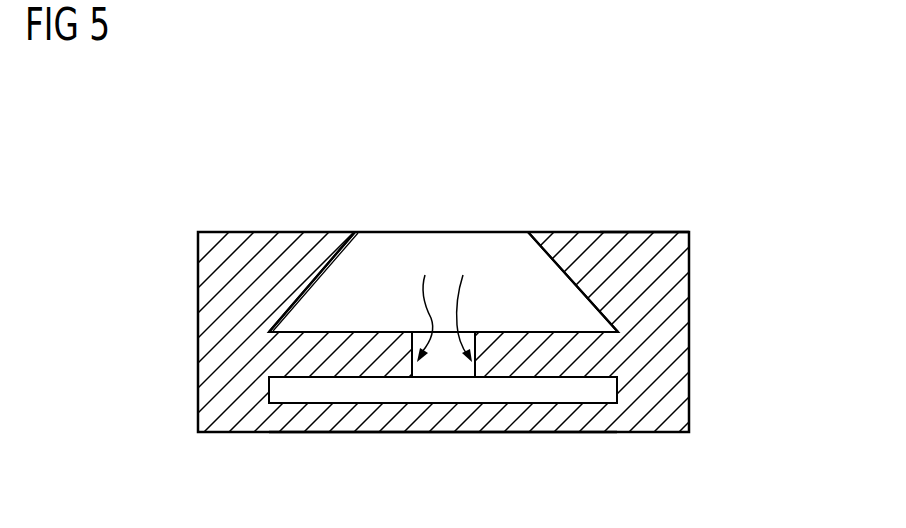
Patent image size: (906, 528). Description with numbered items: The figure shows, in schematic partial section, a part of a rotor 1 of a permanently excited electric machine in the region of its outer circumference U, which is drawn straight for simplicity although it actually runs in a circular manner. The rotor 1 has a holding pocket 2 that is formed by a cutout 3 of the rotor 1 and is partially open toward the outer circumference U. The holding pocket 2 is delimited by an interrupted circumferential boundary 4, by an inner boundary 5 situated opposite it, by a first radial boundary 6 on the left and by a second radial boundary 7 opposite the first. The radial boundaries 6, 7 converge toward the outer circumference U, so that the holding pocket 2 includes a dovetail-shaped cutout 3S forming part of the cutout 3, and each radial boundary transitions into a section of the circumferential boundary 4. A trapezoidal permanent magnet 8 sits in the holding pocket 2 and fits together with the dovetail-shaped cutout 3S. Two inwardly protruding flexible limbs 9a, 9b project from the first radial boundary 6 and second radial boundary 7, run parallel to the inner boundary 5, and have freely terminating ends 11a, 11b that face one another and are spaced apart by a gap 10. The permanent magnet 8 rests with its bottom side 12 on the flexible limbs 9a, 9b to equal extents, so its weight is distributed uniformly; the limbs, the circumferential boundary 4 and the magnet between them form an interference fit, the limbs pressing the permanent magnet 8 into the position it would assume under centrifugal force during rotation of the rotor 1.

The rotor 1 is at (454, 336).
The holding pocket 2 is at (603, 387).
The cutout 3 is at (281, 385).
The dovetail-shaped cutout 3S is at (331, 276).
The circumferential boundary 4 is at (274, 252).
The inner boundary 5 is at (407, 418).
The first radial boundary 6 is at (228, 295).
The second radial boundary 7 is at (657, 288).
The trapezoidal permanent magnet 8 is at (512, 250).
The flexible limb 9a is at (358, 360).
The flexible limb 9b is at (510, 360).
The gap 10 is at (442, 358).
The freely terminating end 11a is at (415, 304).
The freely terminating end 11b is at (472, 304).
The bottom side 12 is at (566, 339).
The outer circumference U is at (643, 232).